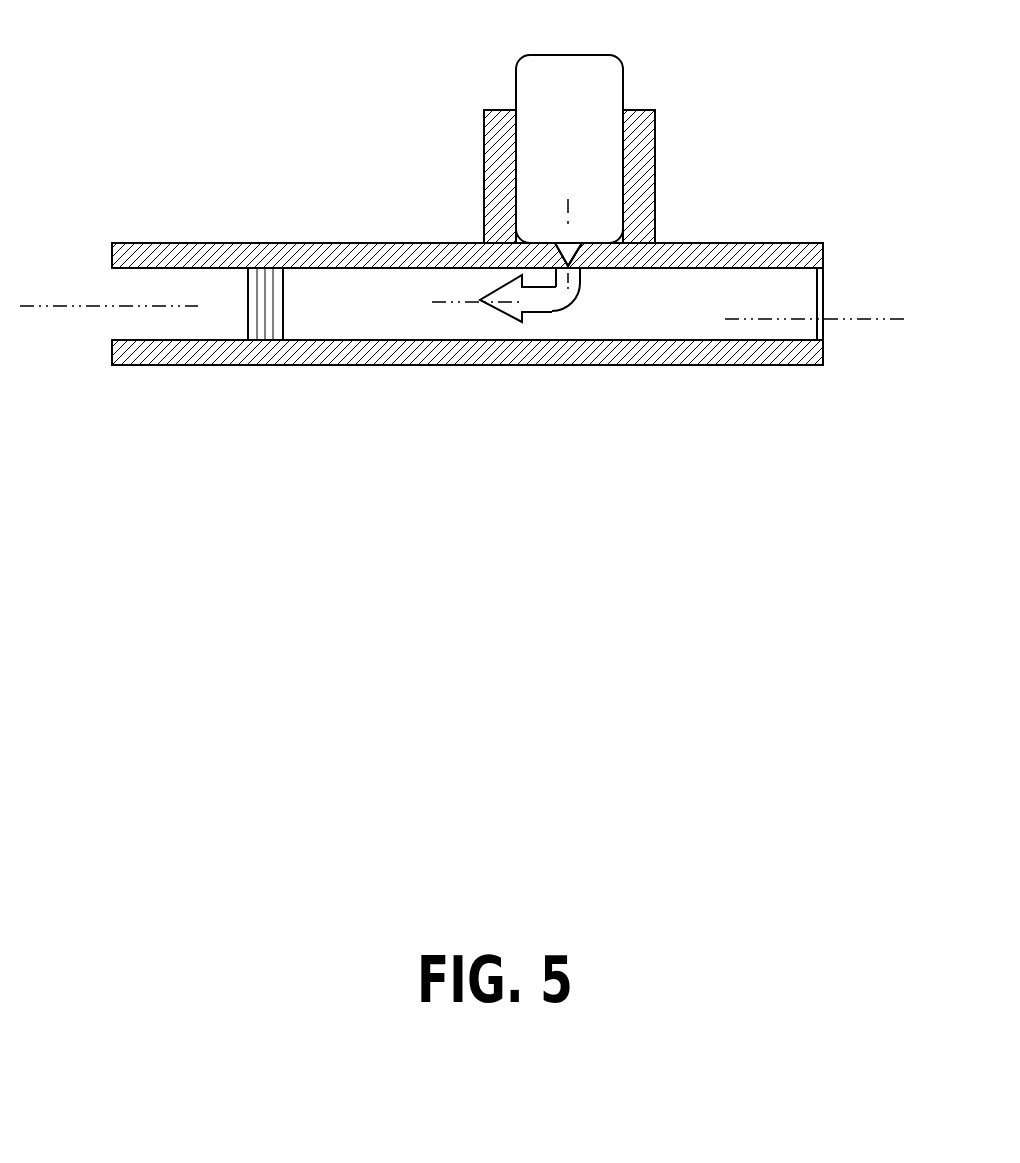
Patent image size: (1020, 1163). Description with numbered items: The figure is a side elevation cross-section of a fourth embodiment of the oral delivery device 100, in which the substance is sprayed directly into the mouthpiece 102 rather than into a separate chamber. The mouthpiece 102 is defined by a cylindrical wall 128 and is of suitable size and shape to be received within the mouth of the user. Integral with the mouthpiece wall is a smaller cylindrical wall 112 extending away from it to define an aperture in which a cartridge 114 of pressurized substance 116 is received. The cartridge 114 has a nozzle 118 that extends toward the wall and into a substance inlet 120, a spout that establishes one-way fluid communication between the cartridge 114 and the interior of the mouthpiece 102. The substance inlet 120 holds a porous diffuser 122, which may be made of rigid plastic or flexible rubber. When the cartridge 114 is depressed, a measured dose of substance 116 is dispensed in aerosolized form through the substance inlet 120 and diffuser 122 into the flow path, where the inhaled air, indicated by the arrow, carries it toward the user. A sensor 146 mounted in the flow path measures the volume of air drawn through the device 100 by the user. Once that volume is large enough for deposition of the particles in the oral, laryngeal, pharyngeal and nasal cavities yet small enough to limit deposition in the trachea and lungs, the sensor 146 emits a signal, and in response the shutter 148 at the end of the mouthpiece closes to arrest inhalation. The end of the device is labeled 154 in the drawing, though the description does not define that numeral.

The oral delivery device 100 is at (208, 205).
The mouthpiece 102 is at (238, 366).
The cylindrical wall 112 is at (484, 172).
The cartridge 114 is at (623, 83).
The substance 116 is at (569, 149).
The nozzle 118 is at (568, 246).
The substance inlet 120 is at (553, 298).
The diffuser 122 is at (584, 280).
The cylindrical wall 128 is at (128, 355).
The sensor 146 is at (284, 316).
The shutter 148 is at (820, 272).
The second end of tubular body 154 is at (823, 338).